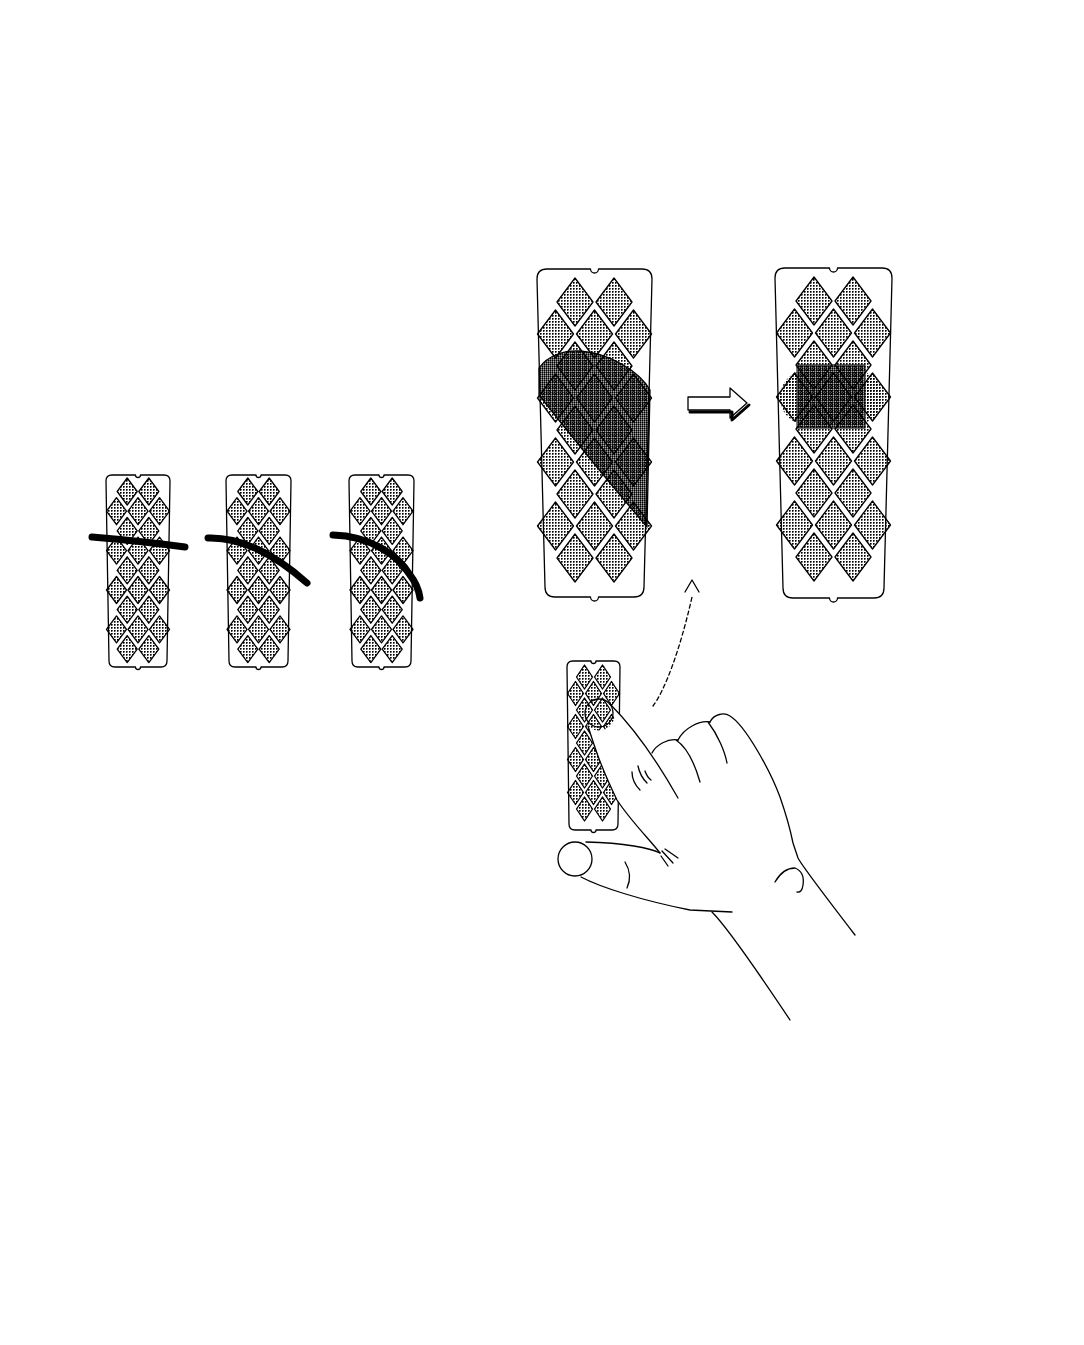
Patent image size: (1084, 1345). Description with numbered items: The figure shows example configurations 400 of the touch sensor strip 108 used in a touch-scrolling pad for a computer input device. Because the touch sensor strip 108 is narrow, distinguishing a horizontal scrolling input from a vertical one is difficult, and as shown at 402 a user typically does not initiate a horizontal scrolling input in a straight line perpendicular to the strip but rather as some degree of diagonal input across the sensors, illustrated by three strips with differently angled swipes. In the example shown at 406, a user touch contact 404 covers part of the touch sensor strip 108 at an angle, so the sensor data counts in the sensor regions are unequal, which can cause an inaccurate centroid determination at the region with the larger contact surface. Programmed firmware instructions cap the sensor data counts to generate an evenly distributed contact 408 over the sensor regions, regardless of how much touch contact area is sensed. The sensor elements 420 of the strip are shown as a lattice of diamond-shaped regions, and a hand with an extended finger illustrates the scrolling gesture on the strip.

The example configurations 400 is at (780, 57).
The diagonal horizontal scrolling input example 402 is at (275, 424).
The user touch contact example 406 is at (765, 229).
The touch sensor strip 108 is at (537, 350).
The sensor electrodes 420 is at (628, 312).
The user touch contact 404 is at (633, 392).
The evenly distributed contact 408 is at (790, 405).